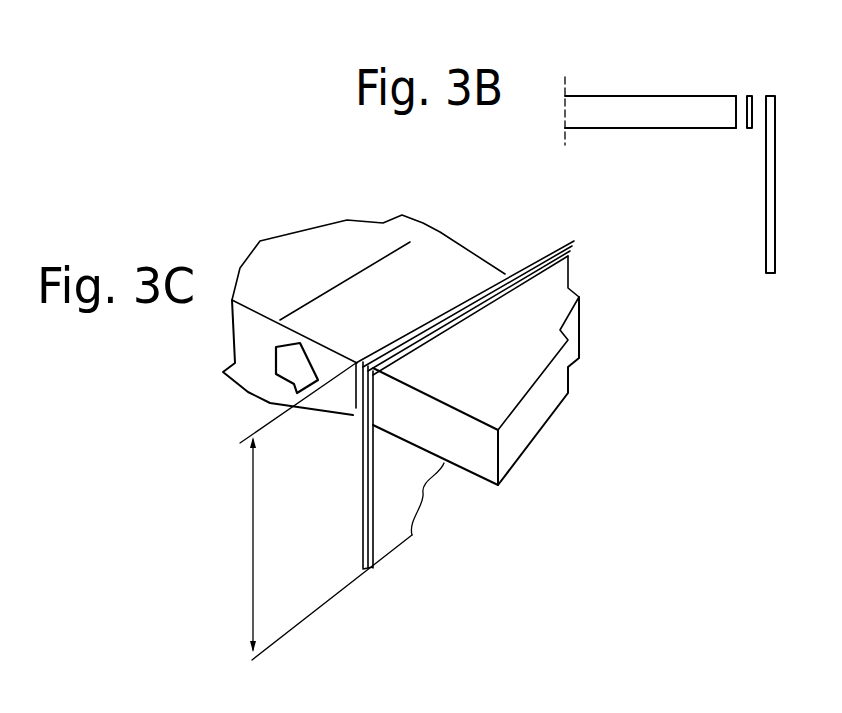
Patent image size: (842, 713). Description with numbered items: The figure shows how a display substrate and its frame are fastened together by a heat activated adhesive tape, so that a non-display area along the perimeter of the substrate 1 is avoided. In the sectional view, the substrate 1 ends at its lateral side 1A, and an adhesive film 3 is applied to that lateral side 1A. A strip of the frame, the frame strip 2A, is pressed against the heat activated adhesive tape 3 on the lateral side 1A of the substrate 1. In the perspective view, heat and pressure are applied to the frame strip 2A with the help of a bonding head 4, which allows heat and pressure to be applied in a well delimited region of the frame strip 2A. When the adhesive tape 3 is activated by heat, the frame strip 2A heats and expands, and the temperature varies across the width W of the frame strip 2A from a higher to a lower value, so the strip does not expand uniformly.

In FIG. 3B, the substrate 1 is at (636, 90).
In FIG. 3C, the substrate 1 is at (586, 345).
In FIG. 3B, the lateral side of the substrate 1A is at (736, 97).
In FIG. 3B, the frame strip 2A is at (770, 192).
In FIG. 3C, the frame strip 2A is at (387, 502).
In FIG. 3B, the adhesive film 3 is at (752, 127).
In FIG. 3C, the adhesive film 3 is at (367, 413).
In FIG. 3C, the bonding head 4 is at (326, 242).
In FIG. 3C, the width of the frame strip W is at (241, 544).